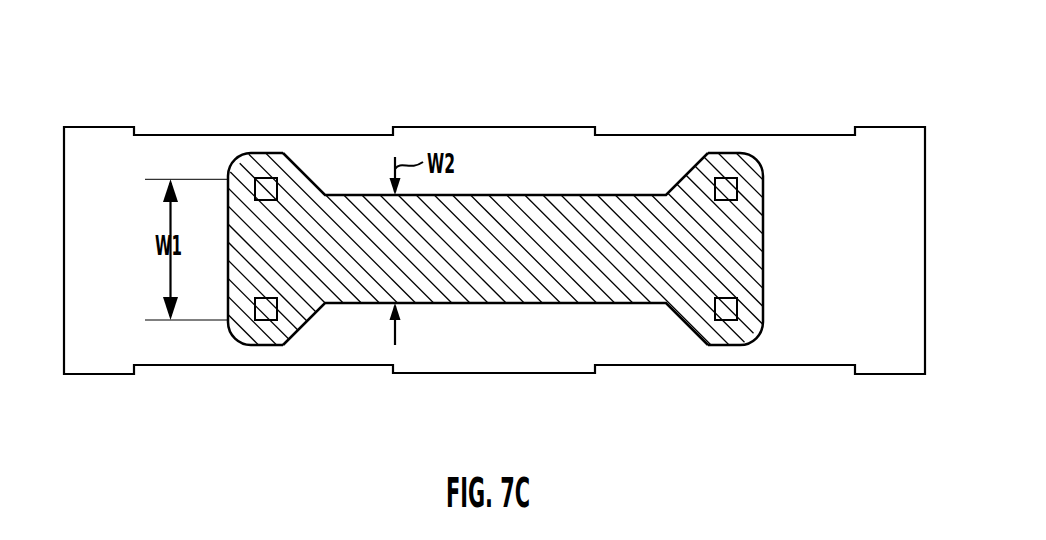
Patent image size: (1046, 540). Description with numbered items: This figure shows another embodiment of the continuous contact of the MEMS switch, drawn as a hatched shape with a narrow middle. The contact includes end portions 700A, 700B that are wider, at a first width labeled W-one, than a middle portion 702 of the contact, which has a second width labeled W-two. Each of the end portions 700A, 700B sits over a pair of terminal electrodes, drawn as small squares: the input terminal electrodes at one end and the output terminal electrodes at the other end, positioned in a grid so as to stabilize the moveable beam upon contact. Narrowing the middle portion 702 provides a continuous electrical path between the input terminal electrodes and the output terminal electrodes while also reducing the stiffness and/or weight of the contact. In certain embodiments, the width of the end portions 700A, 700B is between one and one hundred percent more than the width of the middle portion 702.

The end portion 700A is at (252, 155).
The end portion 700B is at (732, 155).
The middle portion 702 is at (468, 195).